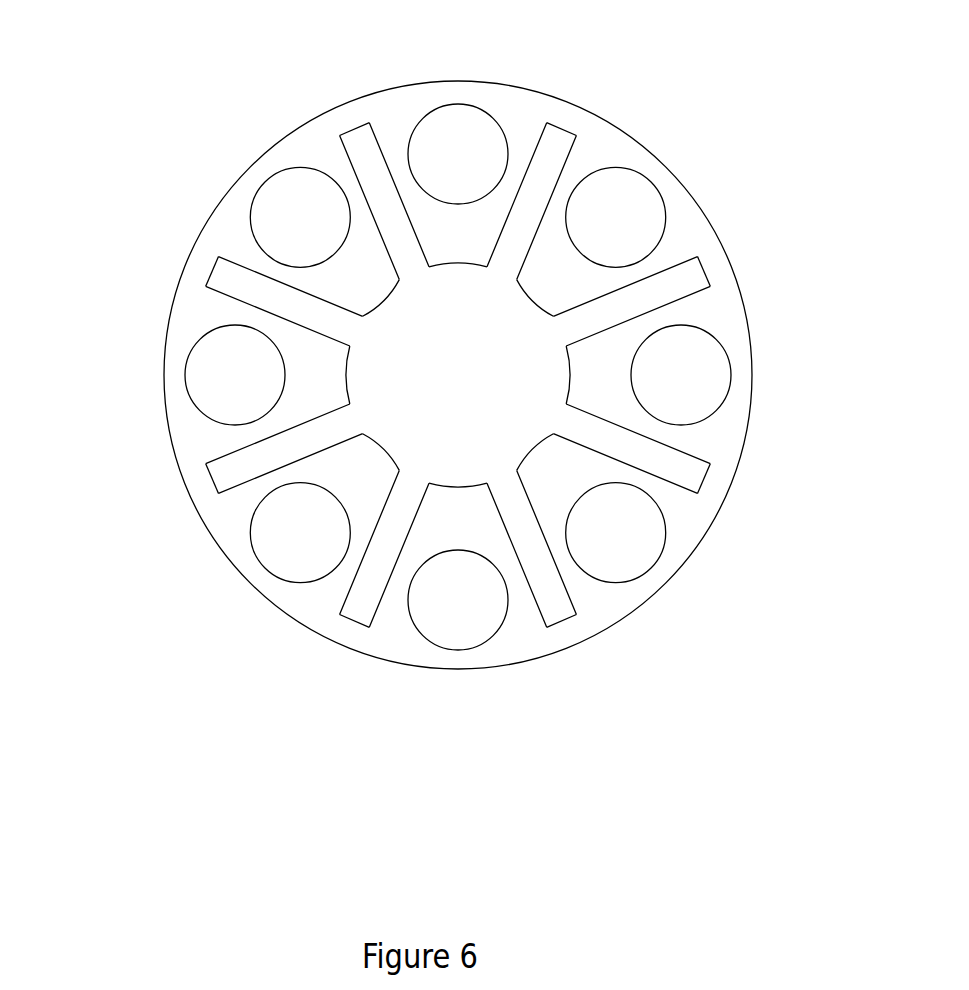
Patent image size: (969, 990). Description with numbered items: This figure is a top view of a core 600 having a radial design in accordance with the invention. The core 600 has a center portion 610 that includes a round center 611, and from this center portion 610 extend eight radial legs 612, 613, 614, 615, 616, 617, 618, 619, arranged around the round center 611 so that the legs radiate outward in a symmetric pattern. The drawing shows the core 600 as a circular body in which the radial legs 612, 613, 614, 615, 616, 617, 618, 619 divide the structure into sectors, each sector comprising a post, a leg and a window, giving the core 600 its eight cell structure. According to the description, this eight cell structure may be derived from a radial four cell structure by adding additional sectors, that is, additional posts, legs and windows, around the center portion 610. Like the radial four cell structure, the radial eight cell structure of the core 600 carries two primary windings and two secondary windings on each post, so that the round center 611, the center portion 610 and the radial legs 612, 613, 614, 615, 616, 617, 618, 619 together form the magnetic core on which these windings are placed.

The core 600 is at (87, 238).
The center portion 610 is at (250, 280).
The round center 611 is at (518, 325).
The radial leg 612 is at (690, 279).
The radial leg 613 is at (687, 471).
The radial leg 614 is at (561, 615).
The radial leg 615 is at (362, 617).
The radial leg 616 is at (225, 478).
The radial leg 617 is at (222, 277).
The radial leg 618 is at (360, 132).
The radial leg 619 is at (552, 137).